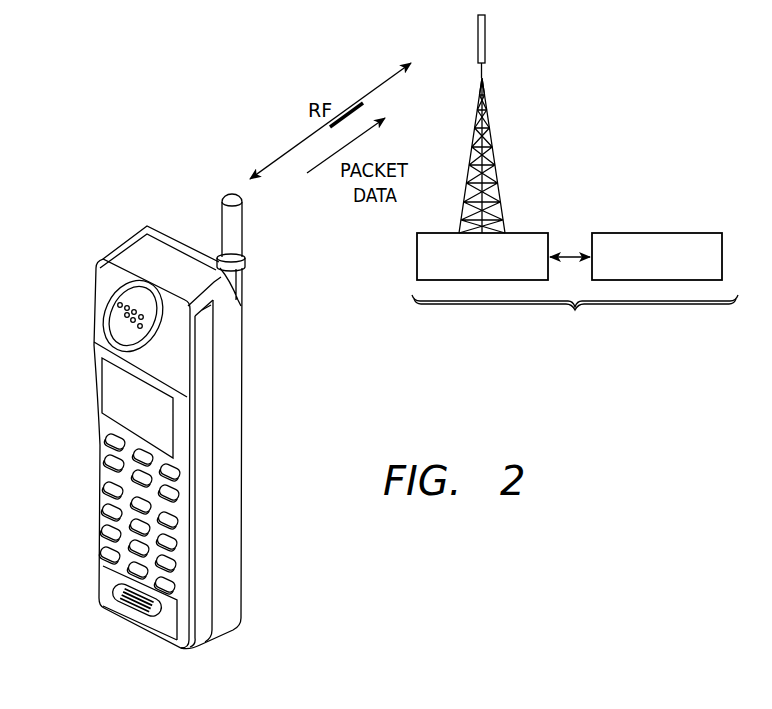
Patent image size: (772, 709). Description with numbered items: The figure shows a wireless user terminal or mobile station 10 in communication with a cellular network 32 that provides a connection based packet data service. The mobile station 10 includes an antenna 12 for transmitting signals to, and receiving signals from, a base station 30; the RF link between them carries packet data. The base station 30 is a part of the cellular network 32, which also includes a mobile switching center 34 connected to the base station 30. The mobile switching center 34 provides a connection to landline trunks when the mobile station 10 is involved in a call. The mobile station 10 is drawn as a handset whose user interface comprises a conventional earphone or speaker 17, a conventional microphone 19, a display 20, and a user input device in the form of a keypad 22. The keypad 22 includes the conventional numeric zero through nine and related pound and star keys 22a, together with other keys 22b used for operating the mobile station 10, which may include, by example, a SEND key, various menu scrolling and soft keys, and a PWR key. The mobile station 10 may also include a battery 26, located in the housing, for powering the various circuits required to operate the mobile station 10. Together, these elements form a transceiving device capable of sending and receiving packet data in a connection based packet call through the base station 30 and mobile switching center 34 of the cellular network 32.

The mobile station 10 is at (100, 222).
The antenna 12 is at (228, 226).
The speaker 17 is at (110, 307).
The microphone 19 is at (135, 610).
The display 20 is at (107, 384).
The keypad 22 is at (107, 513).
The numeric and related keys 22a is at (105, 520).
The other keys 22b is at (108, 447).
The battery 26 is at (237, 533).
The base station 30 is at (529, 233).
The cellular network 32 is at (575, 333).
The mobile switching center 34 is at (657, 233).